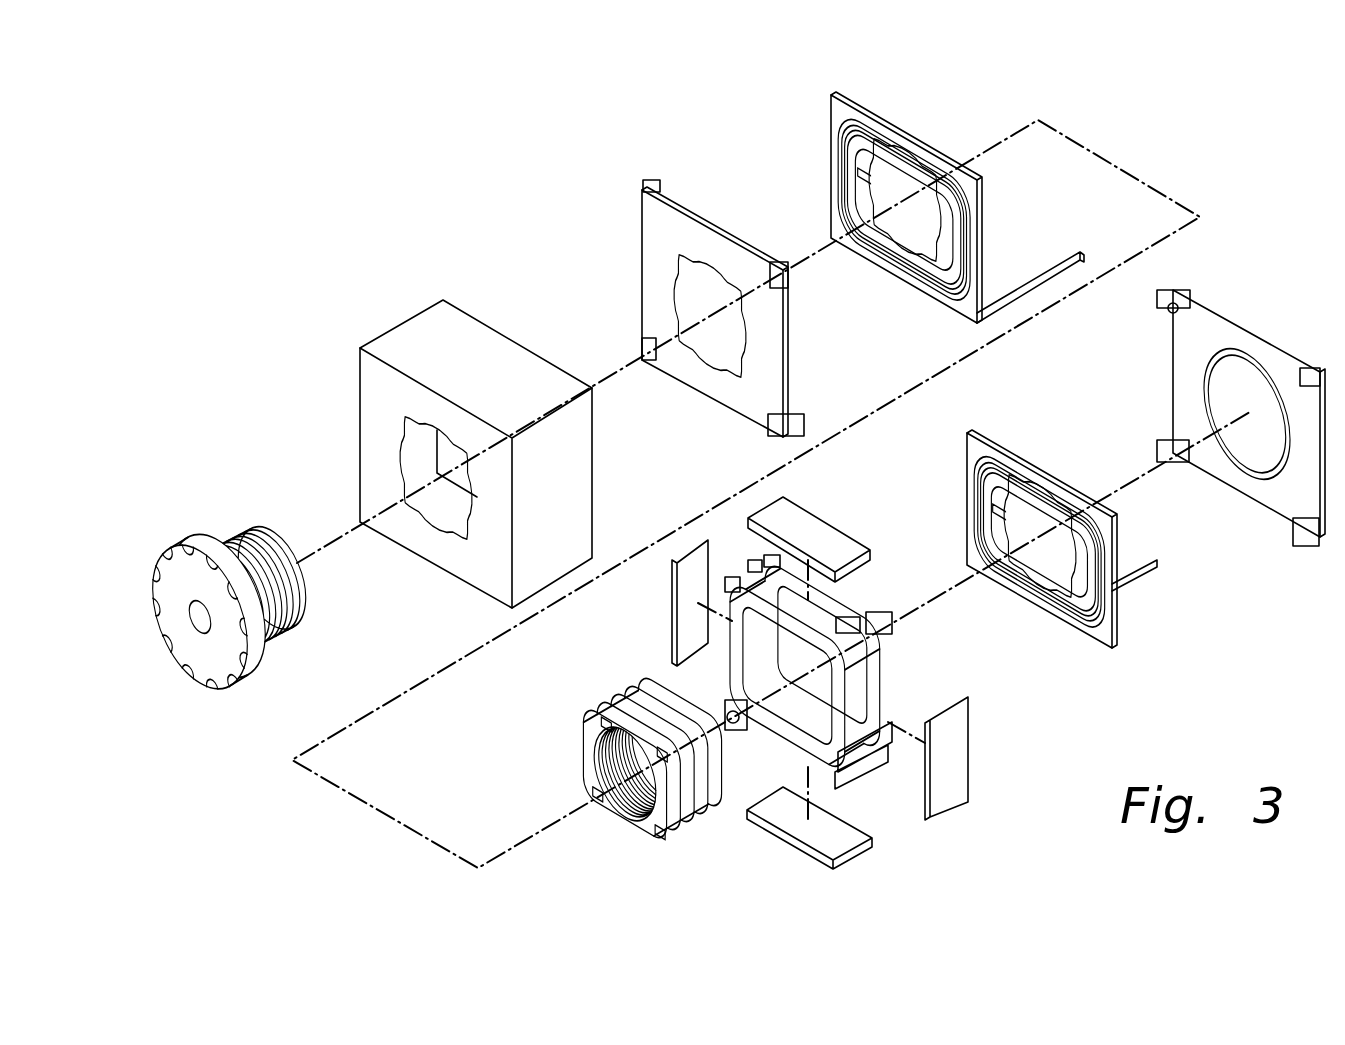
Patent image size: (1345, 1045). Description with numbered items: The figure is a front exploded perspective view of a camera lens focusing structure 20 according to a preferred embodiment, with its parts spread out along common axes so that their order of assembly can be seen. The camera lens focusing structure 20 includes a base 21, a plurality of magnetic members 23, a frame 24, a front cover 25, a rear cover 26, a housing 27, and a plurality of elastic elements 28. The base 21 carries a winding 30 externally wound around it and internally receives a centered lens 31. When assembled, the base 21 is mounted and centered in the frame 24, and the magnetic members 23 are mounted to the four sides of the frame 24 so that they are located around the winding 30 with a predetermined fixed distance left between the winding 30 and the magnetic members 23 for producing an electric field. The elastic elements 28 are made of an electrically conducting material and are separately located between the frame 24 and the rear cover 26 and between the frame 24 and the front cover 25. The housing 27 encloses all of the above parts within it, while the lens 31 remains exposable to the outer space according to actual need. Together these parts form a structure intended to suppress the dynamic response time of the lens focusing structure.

The camera lens focusing structure 20 is at (1068, 688).
The base 21 is at (752, 628).
The magnetic members 23 is at (805, 522).
The frame 24 is at (873, 790).
The front cover 25 is at (673, 230).
The rear cover 26 is at (1205, 325).
The housing 27 is at (480, 345).
The elastic elements 28 is at (860, 100).
The winding 30 is at (707, 797).
The lens 31 is at (260, 656).